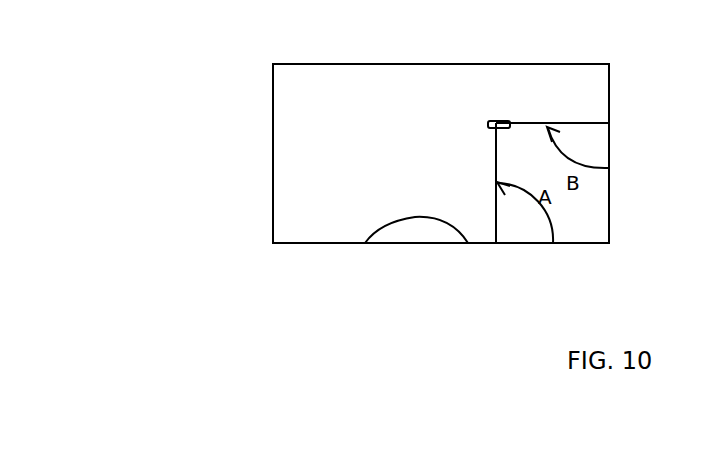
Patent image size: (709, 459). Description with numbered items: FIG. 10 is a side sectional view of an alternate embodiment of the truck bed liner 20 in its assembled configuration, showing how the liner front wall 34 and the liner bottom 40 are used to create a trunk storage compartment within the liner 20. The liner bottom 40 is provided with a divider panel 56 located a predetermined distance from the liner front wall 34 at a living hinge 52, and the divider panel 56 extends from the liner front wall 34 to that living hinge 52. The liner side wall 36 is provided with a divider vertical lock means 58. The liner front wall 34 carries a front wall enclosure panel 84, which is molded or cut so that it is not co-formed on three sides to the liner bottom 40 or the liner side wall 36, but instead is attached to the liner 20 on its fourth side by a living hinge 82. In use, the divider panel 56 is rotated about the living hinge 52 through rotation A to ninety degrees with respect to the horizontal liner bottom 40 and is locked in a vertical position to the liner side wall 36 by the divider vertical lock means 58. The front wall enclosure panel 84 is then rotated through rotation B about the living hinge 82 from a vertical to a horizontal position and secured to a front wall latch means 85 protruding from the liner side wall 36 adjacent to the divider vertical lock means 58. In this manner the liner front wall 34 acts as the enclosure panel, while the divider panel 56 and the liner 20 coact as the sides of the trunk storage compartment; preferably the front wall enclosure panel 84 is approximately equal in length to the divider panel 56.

The truck bed liner 20 is at (292, 160).
The liner front wall 34 is at (611, 97).
The liner side wall 36 is at (552, 78).
The liner bottom 40 is at (480, 243).
The living hinge 52 is at (500, 243).
The divider panel 56 is at (493, 157).
The divider vertical lock means 58 is at (496, 123).
The living hinge 82 is at (612, 123).
The front wall enclosure panel 84 is at (566, 122).
The front wall latch means 85 is at (507, 121).